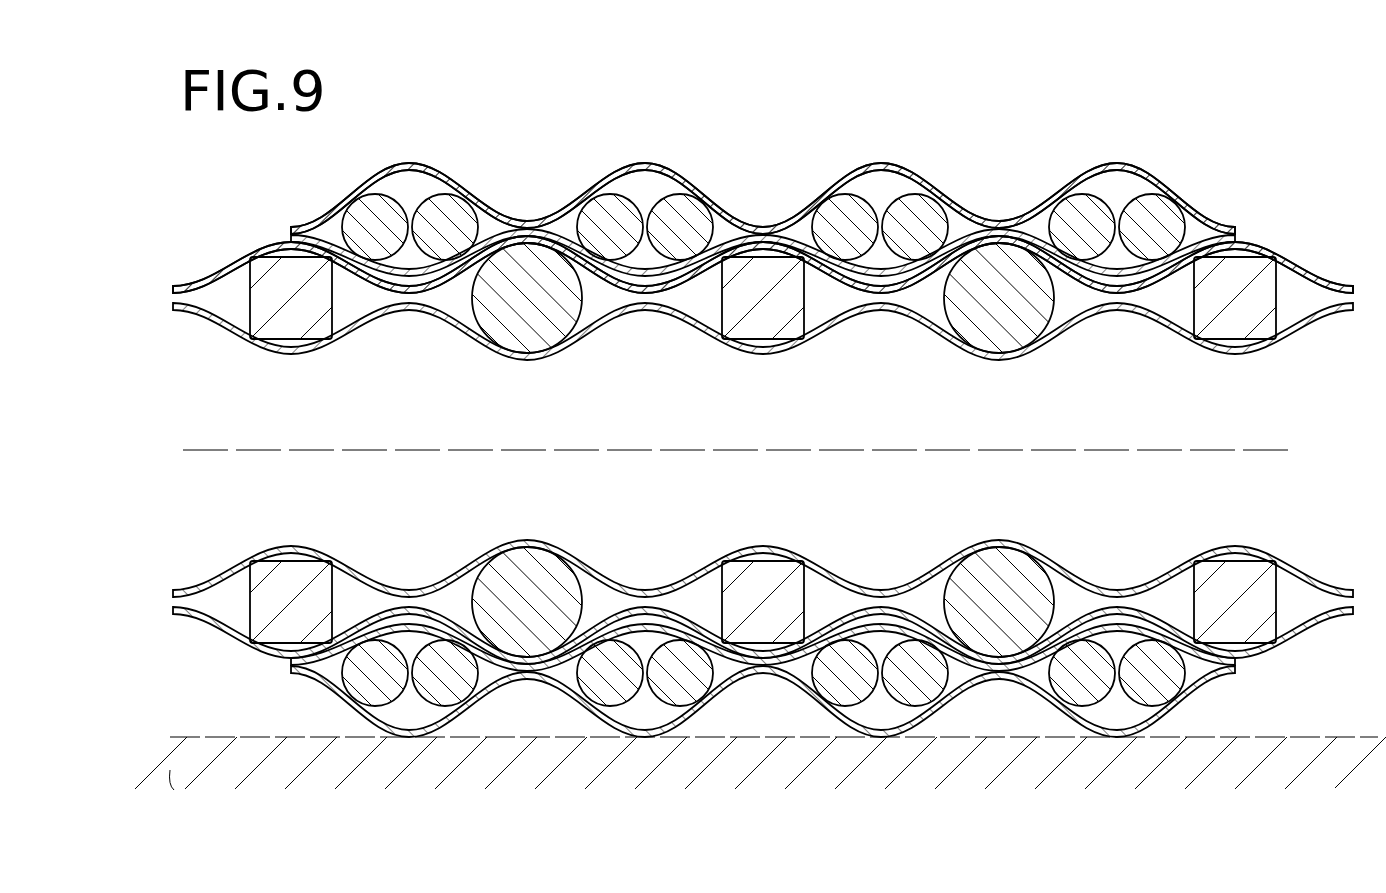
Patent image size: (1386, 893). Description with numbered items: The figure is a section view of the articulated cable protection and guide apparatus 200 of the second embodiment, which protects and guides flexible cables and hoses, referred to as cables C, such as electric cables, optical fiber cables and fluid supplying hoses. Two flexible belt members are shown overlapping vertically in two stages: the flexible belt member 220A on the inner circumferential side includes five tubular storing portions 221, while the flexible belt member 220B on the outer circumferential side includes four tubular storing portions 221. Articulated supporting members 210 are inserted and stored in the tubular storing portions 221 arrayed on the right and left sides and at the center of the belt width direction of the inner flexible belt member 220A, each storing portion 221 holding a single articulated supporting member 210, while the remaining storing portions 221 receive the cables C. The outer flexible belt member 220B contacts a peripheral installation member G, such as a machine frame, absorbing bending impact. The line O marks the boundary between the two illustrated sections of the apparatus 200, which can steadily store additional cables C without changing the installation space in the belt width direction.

The articulated cable protection and guide apparatus 200 is at (763, 457).
The articulated supporting member 210 is at (1202, 578).
The flexible belt member 220A is at (510, 410).
The flexible belt member 220B is at (510, 120).
The tubular storing portion 221 is at (1173, 308).
The cables C is at (340, 168).
The peripheral installation member G is at (1315, 796).
The center axis line O is at (738, 454).